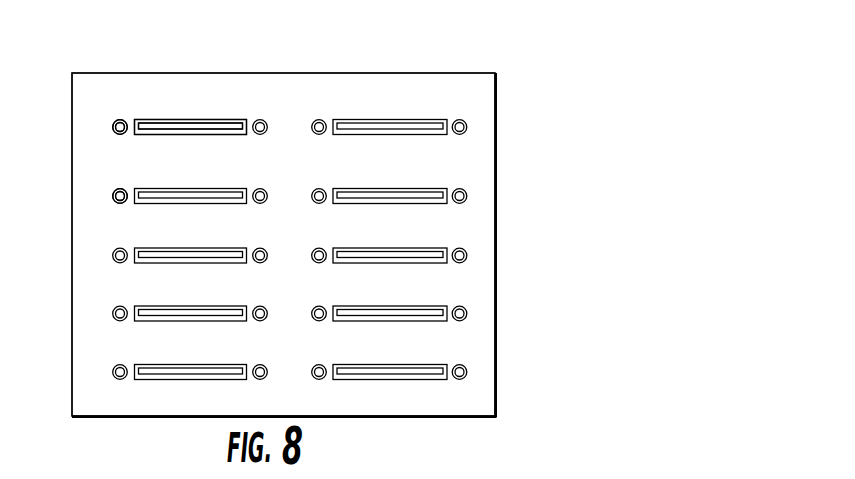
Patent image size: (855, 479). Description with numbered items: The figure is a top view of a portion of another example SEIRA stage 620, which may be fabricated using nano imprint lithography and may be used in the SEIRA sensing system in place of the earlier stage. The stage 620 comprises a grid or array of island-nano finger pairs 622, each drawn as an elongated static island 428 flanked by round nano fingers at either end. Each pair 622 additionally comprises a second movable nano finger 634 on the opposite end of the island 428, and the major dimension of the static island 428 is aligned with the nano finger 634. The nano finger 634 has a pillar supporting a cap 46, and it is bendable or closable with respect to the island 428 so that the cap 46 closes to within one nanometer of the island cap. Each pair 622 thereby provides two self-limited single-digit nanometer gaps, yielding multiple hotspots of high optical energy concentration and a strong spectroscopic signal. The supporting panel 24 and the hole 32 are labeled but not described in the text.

The SEIRA stage 620 is at (57, 103).
The panel 24 is at (72, 212).
The second movable nano finger 634 is at (122, 105).
The cap 46 is at (120, 135).
The island-nano finger pair 622 is at (209, 104).
The static island 428 is at (180, 136).
The hole 32 is at (258, 118).